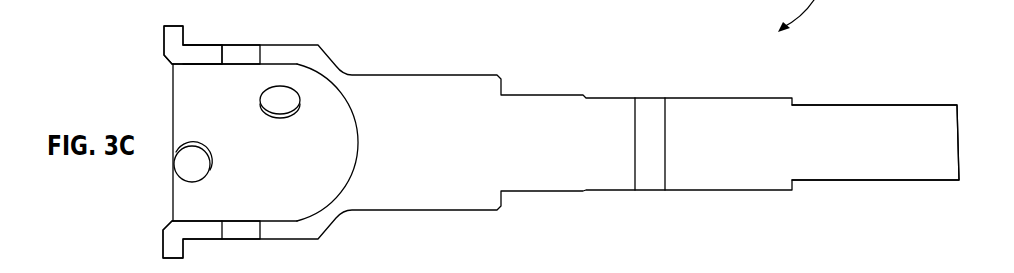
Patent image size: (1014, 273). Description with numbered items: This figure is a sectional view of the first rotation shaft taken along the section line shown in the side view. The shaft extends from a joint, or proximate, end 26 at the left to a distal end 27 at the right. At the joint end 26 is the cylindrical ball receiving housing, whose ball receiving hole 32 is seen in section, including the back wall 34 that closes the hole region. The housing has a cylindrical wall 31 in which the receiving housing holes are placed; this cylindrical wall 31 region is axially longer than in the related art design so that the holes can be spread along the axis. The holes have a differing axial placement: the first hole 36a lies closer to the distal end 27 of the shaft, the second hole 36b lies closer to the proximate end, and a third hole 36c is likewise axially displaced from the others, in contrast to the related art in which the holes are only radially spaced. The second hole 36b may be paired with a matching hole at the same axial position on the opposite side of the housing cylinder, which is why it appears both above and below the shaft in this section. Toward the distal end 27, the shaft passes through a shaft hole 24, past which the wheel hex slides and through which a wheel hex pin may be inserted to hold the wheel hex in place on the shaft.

The shaft hole 24 is at (650, 118).
The joint end 26 is at (161, 91).
The distal end 27 is at (935, 148).
The cylindrical wall 31 is at (202, 62).
The ball receiving hole 32 is at (200, 117).
The back wall 34 is at (360, 128).
The first hole 36a is at (283, 100).
The second hole 36b is at (340, 238).
The third hole 36c is at (195, 171).